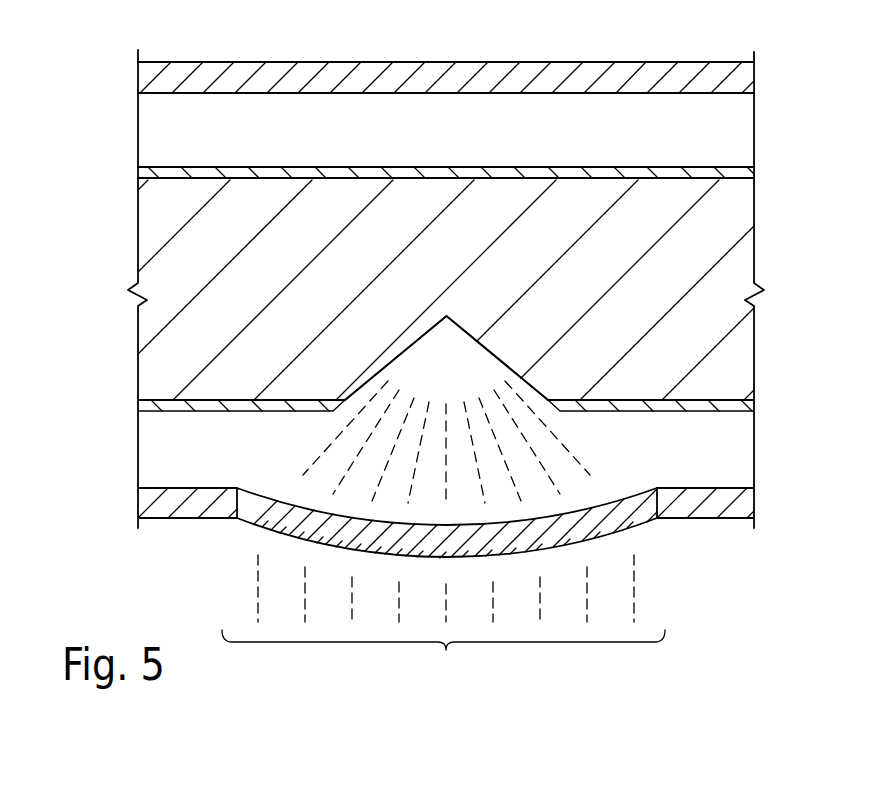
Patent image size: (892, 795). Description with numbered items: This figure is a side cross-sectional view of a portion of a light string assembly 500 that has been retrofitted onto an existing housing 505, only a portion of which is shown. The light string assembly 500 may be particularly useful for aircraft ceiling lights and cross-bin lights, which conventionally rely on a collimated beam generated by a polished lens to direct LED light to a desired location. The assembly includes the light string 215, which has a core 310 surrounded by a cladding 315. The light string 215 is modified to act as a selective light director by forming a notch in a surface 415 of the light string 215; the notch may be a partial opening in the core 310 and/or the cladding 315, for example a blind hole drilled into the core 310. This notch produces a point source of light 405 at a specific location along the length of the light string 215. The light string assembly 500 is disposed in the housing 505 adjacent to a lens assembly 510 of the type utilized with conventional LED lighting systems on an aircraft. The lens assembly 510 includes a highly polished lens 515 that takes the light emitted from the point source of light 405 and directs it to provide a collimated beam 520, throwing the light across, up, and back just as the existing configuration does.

The light string assembly 500 is at (688, 30).
The housing 505 is at (239, 62).
The light string 215 is at (241, 138).
The cladding 315 is at (624, 167).
The core 310 is at (755, 353).
The surface 415 is at (212, 412).
The point source of light 405 is at (525, 418).
The lens 515 is at (253, 525).
The lens assembly 510 is at (652, 549).
The collimated beam 520 is at (443, 617).